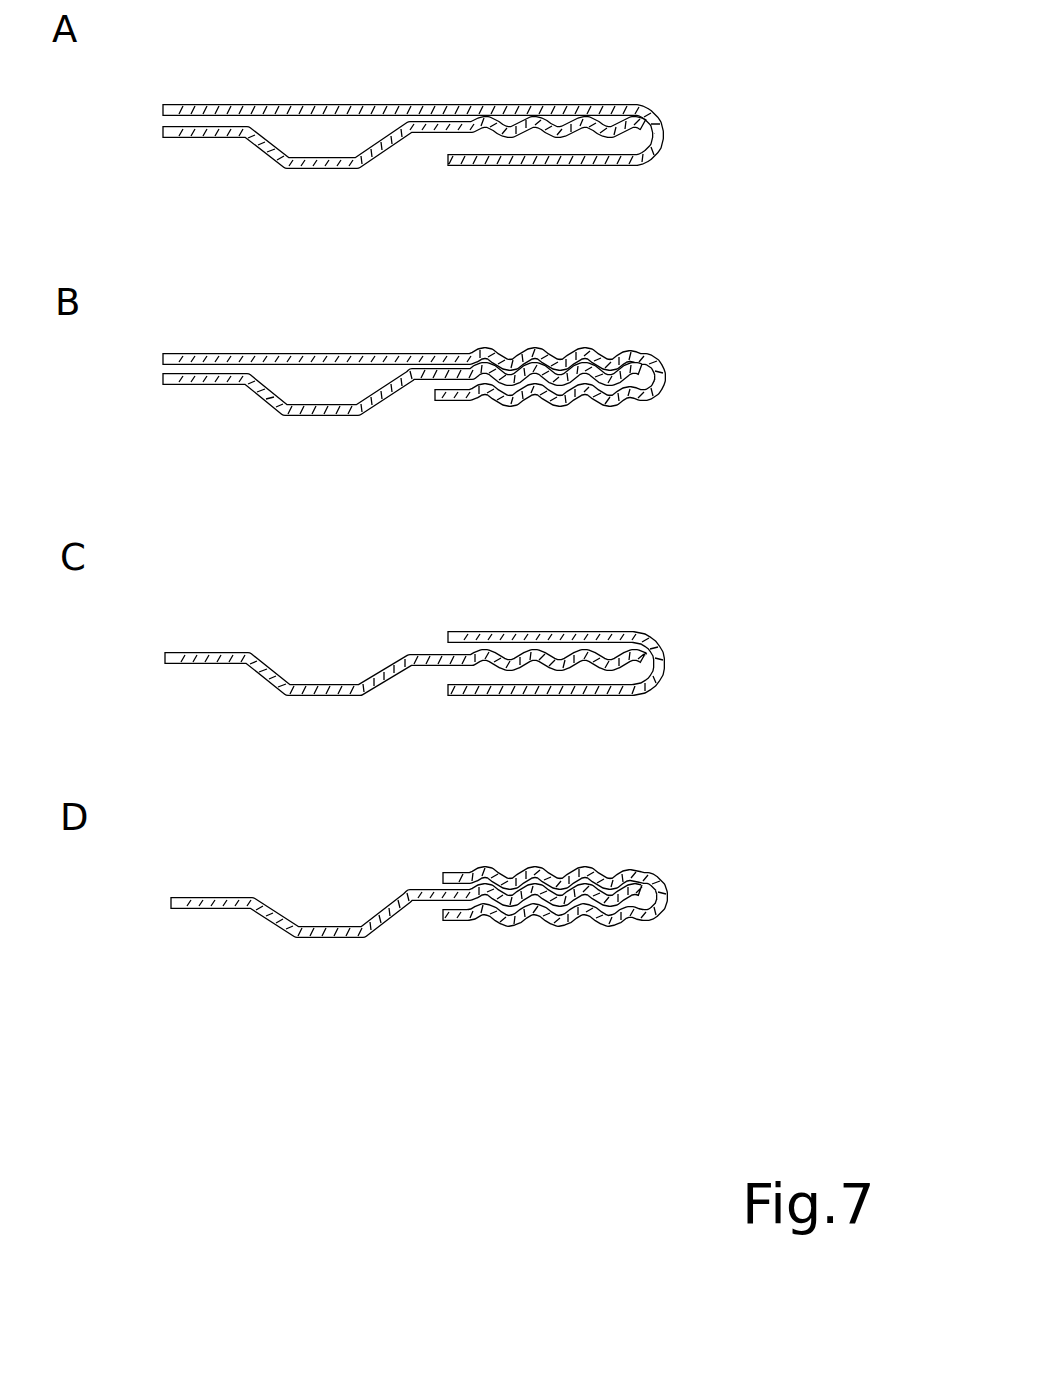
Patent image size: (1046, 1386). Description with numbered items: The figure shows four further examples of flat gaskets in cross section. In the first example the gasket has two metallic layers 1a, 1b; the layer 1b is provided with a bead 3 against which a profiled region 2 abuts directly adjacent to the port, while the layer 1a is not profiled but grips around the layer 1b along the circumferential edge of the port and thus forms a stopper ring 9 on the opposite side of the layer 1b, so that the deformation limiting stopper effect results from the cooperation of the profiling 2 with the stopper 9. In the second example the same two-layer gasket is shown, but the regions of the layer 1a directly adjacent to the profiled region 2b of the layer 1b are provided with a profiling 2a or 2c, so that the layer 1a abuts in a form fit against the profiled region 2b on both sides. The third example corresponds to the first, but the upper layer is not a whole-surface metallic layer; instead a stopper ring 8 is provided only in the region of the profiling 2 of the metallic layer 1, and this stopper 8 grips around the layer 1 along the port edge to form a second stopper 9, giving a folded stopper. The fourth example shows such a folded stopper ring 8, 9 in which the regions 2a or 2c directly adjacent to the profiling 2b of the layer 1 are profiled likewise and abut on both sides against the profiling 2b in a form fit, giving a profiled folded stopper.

The metallic layer 1 is at (222, 657).
The metallic layer 1a is at (201, 108).
The metallic layer 1b is at (205, 137).
The profiled region 2 is at (533, 123).
The profiling 2a is at (533, 352).
The profiled region 2b is at (593, 370).
The profiling 2c is at (543, 395).
The bead 3 is at (342, 168).
The stopper ring 8 is at (533, 632).
The stopper ring 9 is at (520, 158).